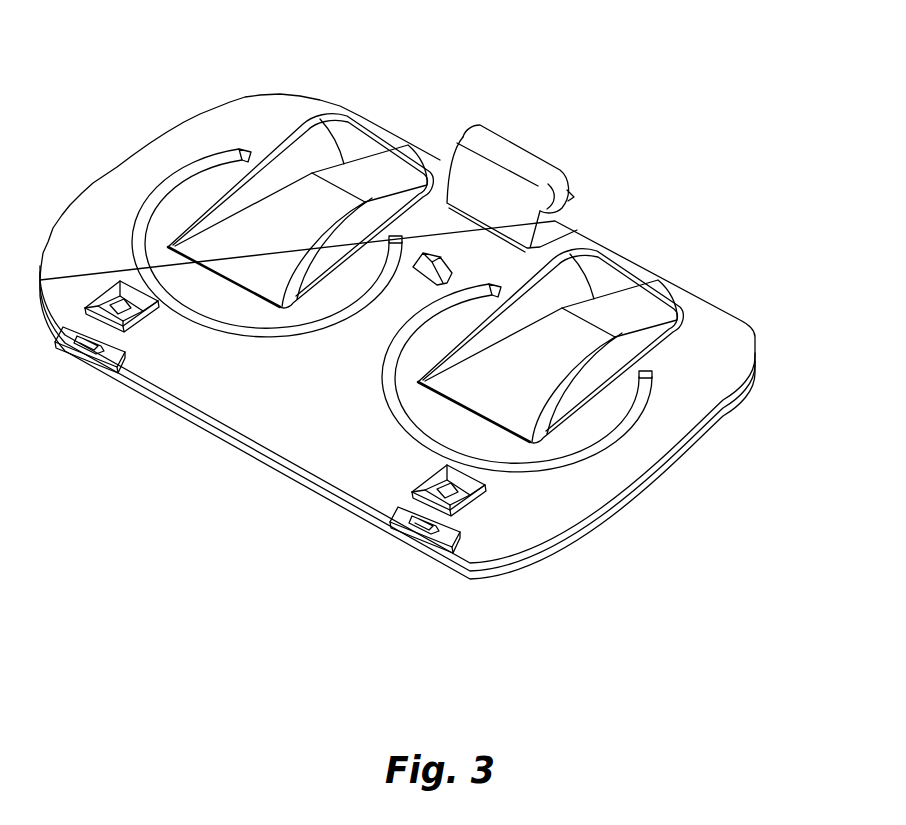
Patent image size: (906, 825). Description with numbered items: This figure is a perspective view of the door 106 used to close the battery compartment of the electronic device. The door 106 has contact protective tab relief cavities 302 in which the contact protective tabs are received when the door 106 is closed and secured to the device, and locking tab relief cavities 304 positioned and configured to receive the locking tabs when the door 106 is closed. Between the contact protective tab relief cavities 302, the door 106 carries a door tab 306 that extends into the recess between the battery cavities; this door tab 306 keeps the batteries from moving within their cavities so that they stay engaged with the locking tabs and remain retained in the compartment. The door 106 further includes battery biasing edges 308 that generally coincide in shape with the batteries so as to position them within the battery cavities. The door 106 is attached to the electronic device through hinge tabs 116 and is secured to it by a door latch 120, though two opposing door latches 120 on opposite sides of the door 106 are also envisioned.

The door 106 is at (228, 102).
The contact protective tab relief cavities 302 is at (352, 167).
The locking tab relief cavities 304 is at (129, 320).
The door tab 306 is at (431, 257).
The battery biasing edges 308 is at (155, 189).
The hinge tabs 116 is at (77, 357).
The door latch 120 is at (540, 164).